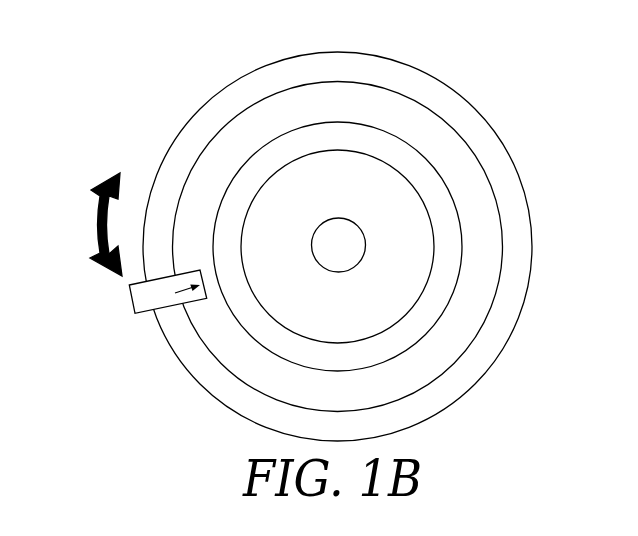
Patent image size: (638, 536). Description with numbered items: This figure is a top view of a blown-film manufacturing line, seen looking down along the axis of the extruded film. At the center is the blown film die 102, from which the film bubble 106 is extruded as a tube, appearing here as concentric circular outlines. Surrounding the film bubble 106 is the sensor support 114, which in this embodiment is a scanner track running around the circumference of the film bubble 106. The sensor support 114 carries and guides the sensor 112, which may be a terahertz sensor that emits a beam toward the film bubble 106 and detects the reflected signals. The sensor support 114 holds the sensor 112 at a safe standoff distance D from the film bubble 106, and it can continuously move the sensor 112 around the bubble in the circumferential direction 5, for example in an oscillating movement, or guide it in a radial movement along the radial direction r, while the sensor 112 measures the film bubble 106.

The blown film die 102 is at (315, 150).
The film bubble 106 is at (441, 336).
The sensor support 114 is at (487, 116).
The sensor 112 is at (118, 307).
The circumferential direction 5 is at (97, 224).
The standoff distance D is at (229, 276).
The radial direction r is at (338, 243).